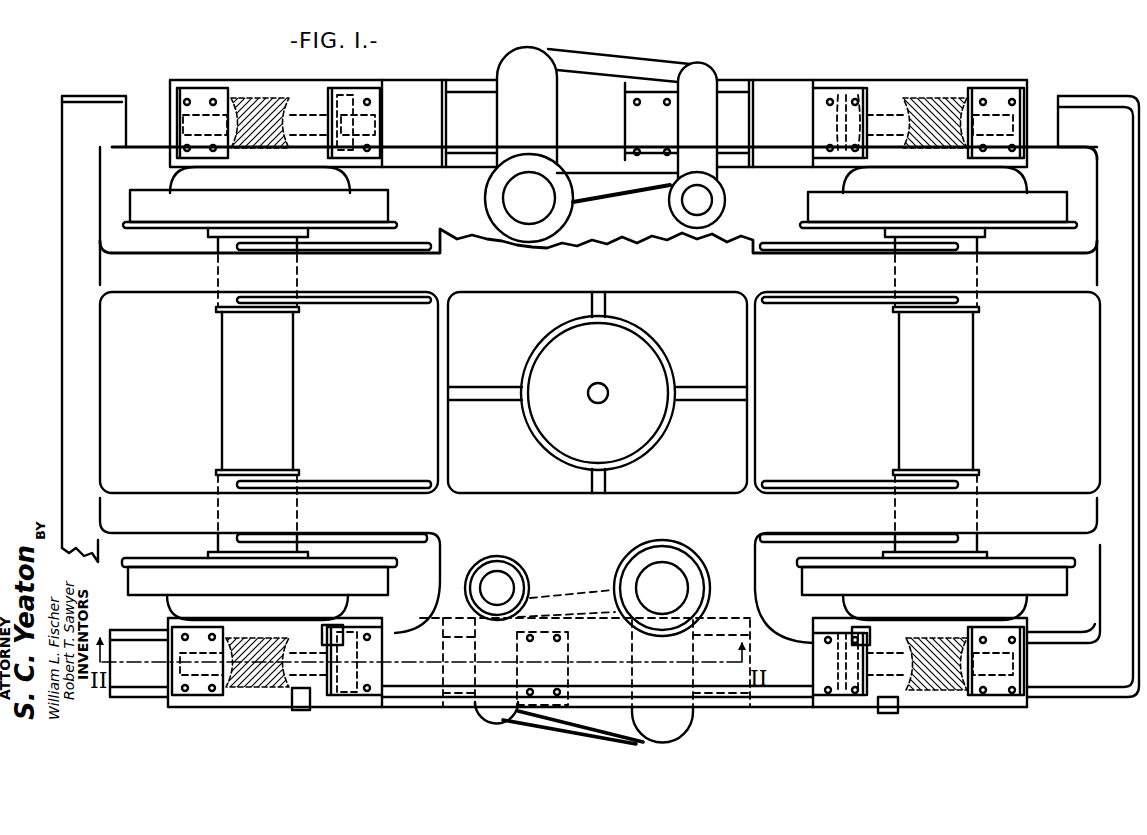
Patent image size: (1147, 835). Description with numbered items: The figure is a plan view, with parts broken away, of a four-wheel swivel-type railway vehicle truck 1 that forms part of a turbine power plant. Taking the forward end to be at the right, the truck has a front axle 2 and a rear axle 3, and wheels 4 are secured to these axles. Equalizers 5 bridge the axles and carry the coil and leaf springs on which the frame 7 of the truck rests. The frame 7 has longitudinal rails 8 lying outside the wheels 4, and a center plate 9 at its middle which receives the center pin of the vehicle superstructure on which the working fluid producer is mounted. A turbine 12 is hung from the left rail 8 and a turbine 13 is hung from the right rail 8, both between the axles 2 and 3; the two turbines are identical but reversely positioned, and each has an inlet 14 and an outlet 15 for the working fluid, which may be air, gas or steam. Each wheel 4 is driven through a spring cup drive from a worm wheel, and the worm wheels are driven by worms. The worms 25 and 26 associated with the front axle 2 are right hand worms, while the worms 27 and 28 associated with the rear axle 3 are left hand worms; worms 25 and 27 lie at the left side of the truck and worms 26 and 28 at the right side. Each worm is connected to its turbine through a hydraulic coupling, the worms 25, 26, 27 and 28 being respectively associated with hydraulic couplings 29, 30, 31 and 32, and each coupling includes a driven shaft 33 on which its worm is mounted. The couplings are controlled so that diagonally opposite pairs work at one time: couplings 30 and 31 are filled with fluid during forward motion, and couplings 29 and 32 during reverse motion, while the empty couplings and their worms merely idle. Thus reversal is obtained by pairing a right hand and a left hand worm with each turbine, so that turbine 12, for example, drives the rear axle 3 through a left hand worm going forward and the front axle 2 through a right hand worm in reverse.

The railway vehicle truck 1 is at (1096, 353).
The front axle 2 is at (936, 394).
The rear axle 3 is at (257, 394).
The wheels 4 is at (599, 393).
The equalizers 5 is at (370, 249).
The frame 7 is at (90, 425).
The longitudinal rails 8 is at (1072, 112).
The center plate 9 is at (597, 392).
The turbine 12 is at (597, 124).
The turbine 13 is at (568, 667).
The inlet 14 is at (712, 202).
The outlet 15 is at (546, 203).
The worm 25 is at (928, 100).
The worm 26 is at (938, 692).
The worm 27 is at (252, 98).
The worm 28 is at (255, 703).
The hydraulic coupling 29 is at (839, 98).
The hydraulic coupling 30 is at (838, 692).
The hydraulic coupling 31 is at (361, 100).
The hydraulic coupling 32 is at (356, 694).
The driven shaft 33 is at (306, 102).